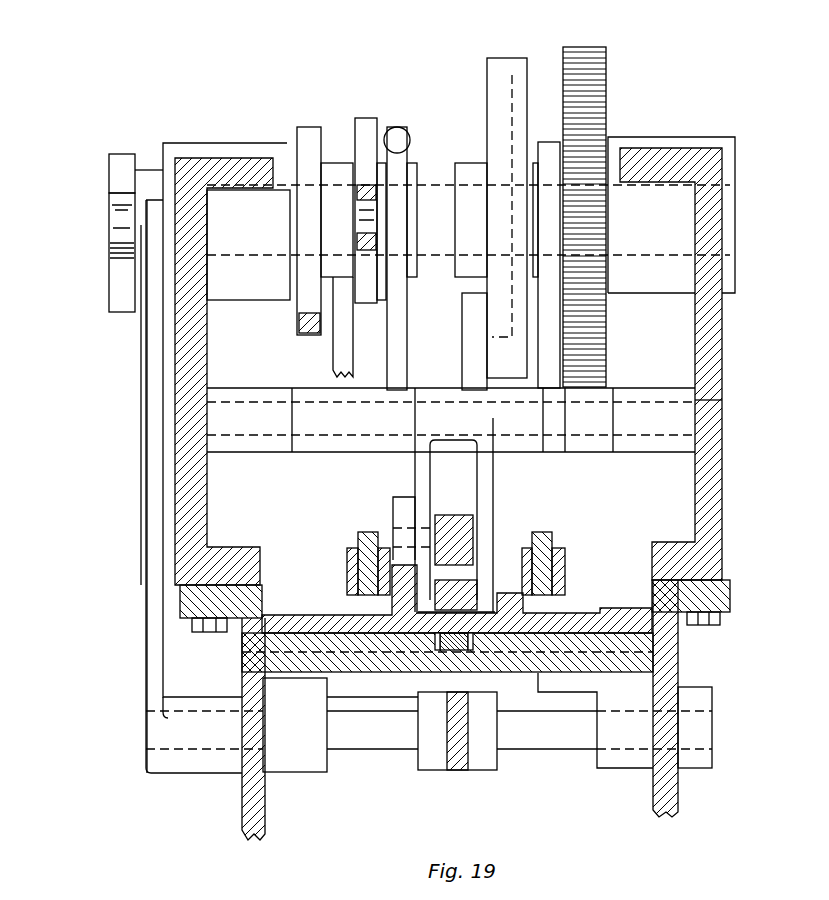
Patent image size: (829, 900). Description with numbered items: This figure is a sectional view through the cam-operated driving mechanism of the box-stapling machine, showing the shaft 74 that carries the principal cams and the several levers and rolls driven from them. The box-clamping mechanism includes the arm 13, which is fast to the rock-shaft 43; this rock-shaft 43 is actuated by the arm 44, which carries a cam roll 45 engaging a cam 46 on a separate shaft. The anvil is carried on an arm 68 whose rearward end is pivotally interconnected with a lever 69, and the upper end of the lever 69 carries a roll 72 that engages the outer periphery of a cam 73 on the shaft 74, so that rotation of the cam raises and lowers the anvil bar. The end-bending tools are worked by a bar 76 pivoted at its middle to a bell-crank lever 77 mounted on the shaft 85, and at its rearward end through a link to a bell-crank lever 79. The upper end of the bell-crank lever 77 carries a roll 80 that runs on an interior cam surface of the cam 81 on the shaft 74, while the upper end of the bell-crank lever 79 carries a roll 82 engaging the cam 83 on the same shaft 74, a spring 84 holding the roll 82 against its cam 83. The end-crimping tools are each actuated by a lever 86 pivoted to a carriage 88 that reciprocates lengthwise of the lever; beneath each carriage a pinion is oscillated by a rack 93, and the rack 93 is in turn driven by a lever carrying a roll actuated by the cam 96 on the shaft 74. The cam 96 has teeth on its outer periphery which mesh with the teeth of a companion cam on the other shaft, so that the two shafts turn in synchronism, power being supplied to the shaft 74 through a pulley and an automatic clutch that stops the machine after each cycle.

The arm 13 is at (465, 737).
The rock-shaft 43 is at (548, 740).
The arm 44 is at (148, 367).
The cam roll 45 is at (118, 216).
The cam 46 is at (120, 166).
The arm 68 is at (478, 532).
The lever 69 is at (340, 377).
The roll 72 is at (308, 311).
The cam 73 is at (309, 132).
The shaft 74 is at (276, 258).
The bar 76 is at (470, 578).
The bell-crank lever 77 is at (447, 371).
The bell-crank lever 79 is at (395, 323).
The roll 80 is at (487, 300).
The cam 81 is at (500, 68).
The roll 82 is at (367, 213).
The cam 83 is at (365, 118).
The spring 84 is at (402, 129).
The shaft 85 is at (635, 401).
The lever 86 is at (362, 531).
The carriage 88 is at (570, 583).
The rack 93 is at (452, 655).
The cam 96 is at (600, 47).